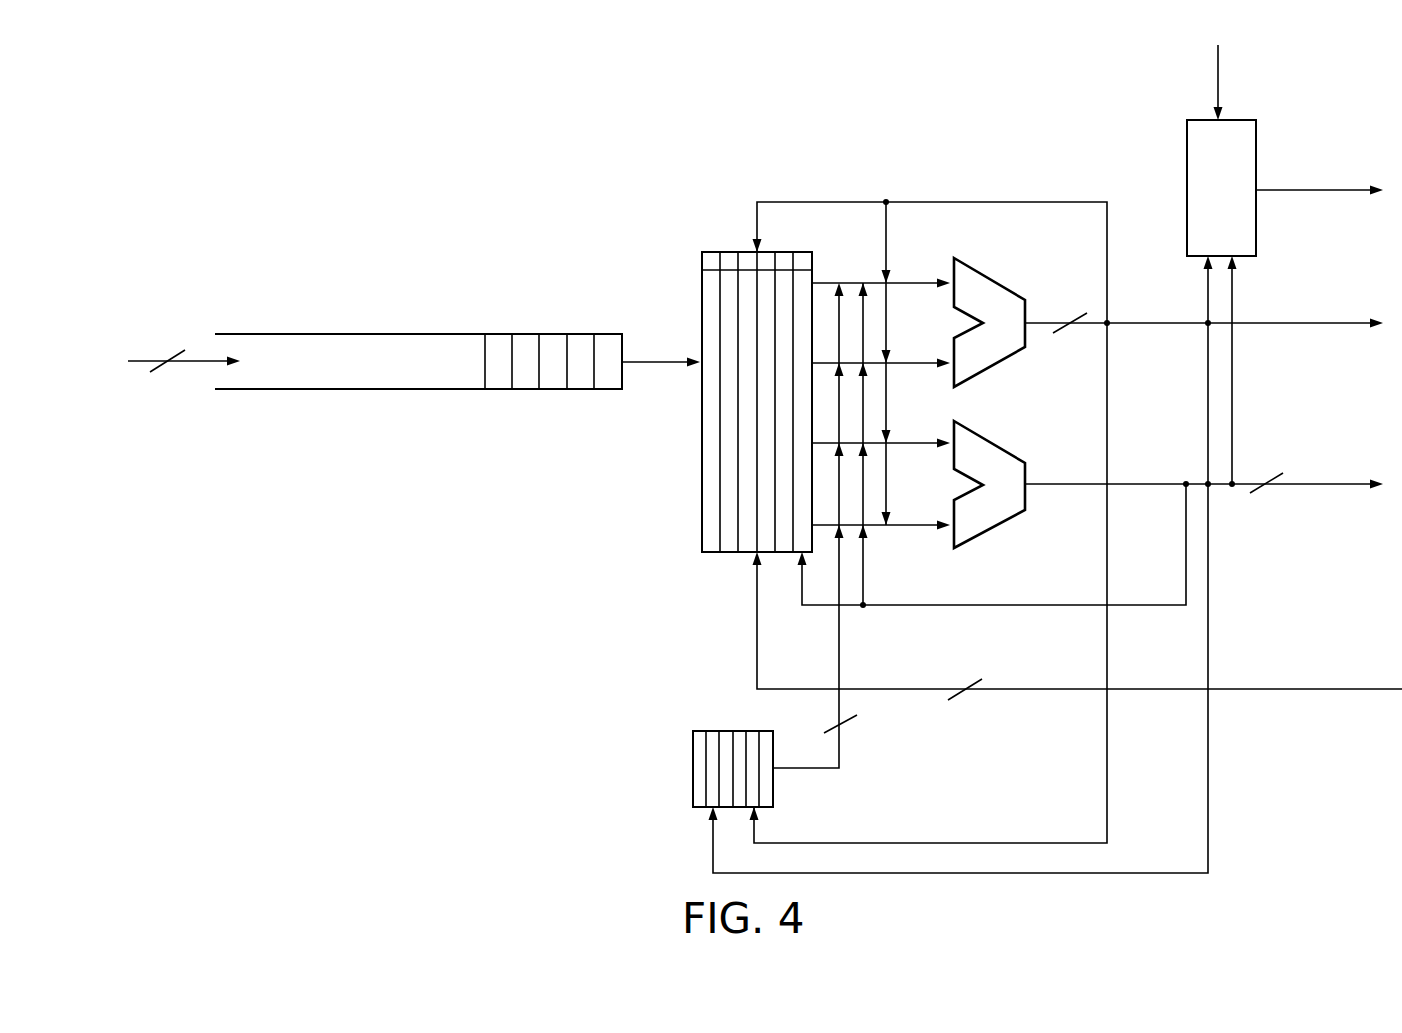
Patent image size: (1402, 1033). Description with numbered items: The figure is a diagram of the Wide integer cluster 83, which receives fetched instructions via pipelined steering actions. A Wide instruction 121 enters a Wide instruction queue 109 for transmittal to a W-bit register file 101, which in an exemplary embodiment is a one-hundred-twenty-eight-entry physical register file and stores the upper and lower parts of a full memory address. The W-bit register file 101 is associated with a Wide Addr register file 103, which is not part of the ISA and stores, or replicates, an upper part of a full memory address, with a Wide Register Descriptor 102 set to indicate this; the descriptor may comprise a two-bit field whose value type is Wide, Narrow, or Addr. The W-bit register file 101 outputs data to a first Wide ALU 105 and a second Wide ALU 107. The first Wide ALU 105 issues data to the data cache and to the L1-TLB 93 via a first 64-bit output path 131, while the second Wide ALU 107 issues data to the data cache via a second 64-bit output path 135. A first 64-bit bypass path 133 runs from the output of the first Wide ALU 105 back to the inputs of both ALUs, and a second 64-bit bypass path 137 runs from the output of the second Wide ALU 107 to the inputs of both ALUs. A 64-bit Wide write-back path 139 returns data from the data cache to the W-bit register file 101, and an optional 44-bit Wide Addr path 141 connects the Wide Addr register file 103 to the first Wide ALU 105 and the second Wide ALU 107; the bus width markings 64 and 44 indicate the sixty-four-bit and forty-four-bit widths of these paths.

The Wide instruction 121 is at (148, 360).
The 64-bit bus width indicator 64 is at (720, 517).
The Wide instruction queue 109 is at (330, 333).
The W-bit register file 101 is at (702, 527).
The Wide Register Descriptor 102 is at (702, 262).
The first 64-bit bypass path 133 is at (1012, 202).
The level-1 transition look-aside buffer (L1-TLB) 93 is at (1240, 205).
The first Wide ALU 105 is at (1000, 362).
The second Wide ALU 107 is at (1000, 448).
The first 64-bit output path 131 is at (1343, 323).
The second 64-bit output path 135 is at (1337, 484).
The second 64-bit bypass path 137 is at (1128, 605).
The 64-bit Wide write-back path 139 is at (1128, 690).
The Wide Addr register file 103 is at (693, 742).
The 44-bit Wide Addr path 141 is at (823, 768).
The 44-bit bus width indicator 44 is at (848, 735).
The Wide integer cluster 83 is at (467, 606).